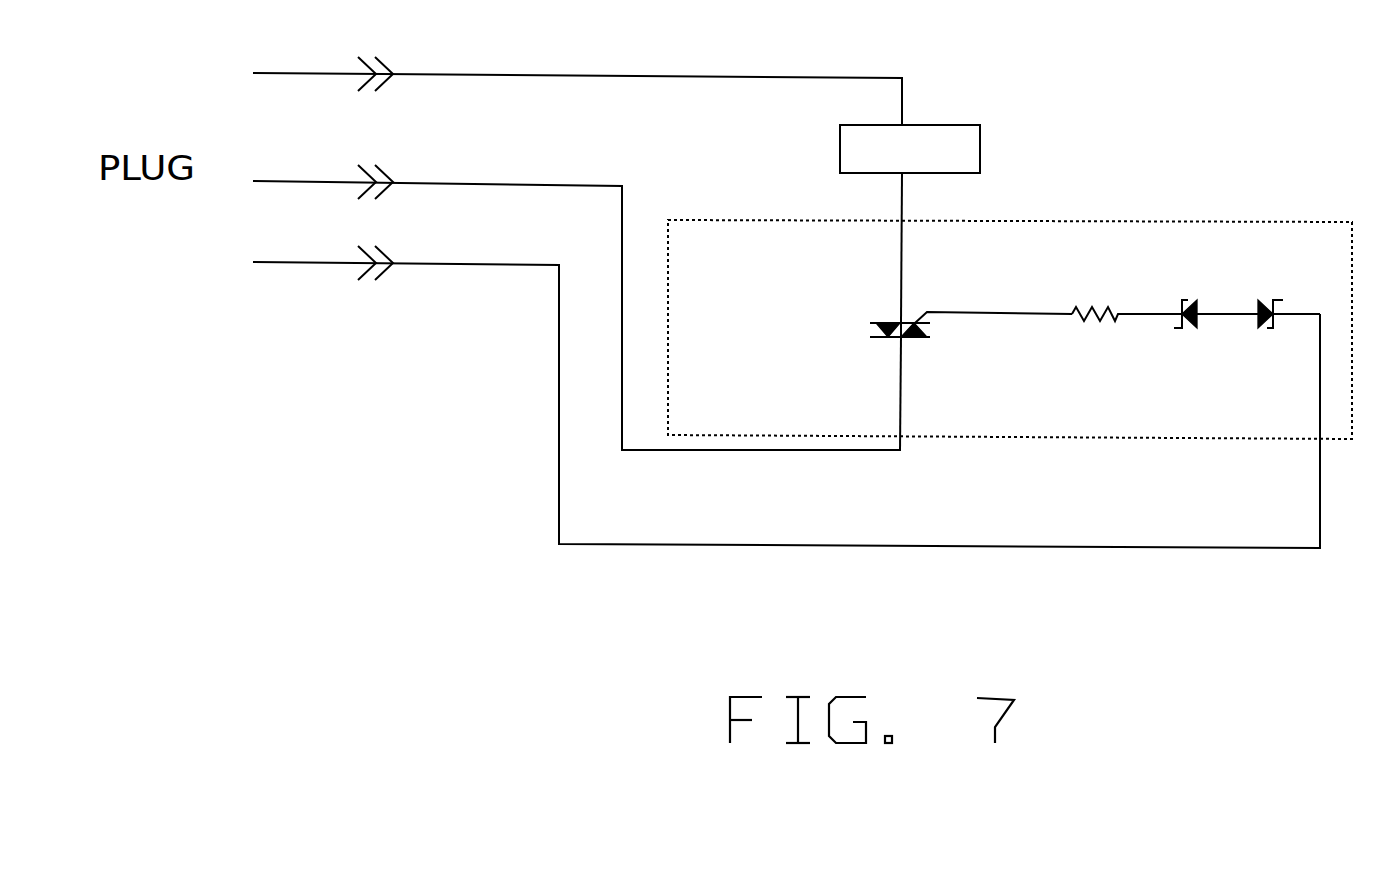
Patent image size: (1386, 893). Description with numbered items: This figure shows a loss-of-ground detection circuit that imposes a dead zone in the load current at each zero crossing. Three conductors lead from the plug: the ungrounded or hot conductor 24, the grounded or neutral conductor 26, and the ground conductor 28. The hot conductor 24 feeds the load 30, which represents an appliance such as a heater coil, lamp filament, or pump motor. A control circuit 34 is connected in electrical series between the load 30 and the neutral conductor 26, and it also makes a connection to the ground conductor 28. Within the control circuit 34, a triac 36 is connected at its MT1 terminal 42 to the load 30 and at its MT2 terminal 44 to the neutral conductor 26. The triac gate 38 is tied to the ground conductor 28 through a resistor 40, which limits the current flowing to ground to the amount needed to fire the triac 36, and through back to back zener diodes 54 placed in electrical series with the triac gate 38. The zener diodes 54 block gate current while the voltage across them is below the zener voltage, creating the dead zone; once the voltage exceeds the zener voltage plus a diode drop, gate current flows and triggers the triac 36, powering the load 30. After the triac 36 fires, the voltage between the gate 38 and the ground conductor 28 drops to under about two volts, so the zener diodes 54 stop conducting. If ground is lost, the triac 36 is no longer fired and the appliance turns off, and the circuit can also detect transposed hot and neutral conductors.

The ungrounded conductor 24 is at (516, 60).
The grounded conductor 26 is at (485, 168).
The ground conductor 28 is at (468, 247).
The load 30 is at (993, 143).
The control circuit 34 is at (1182, 206).
The triac 36 is at (857, 343).
The triac gate 38 is at (962, 328).
The resistor 40 is at (1087, 298).
The MT1 terminal 42 is at (885, 313).
The MT2 terminal 44 is at (902, 342).
The back to back zener diodes 54 is at (1247, 347).